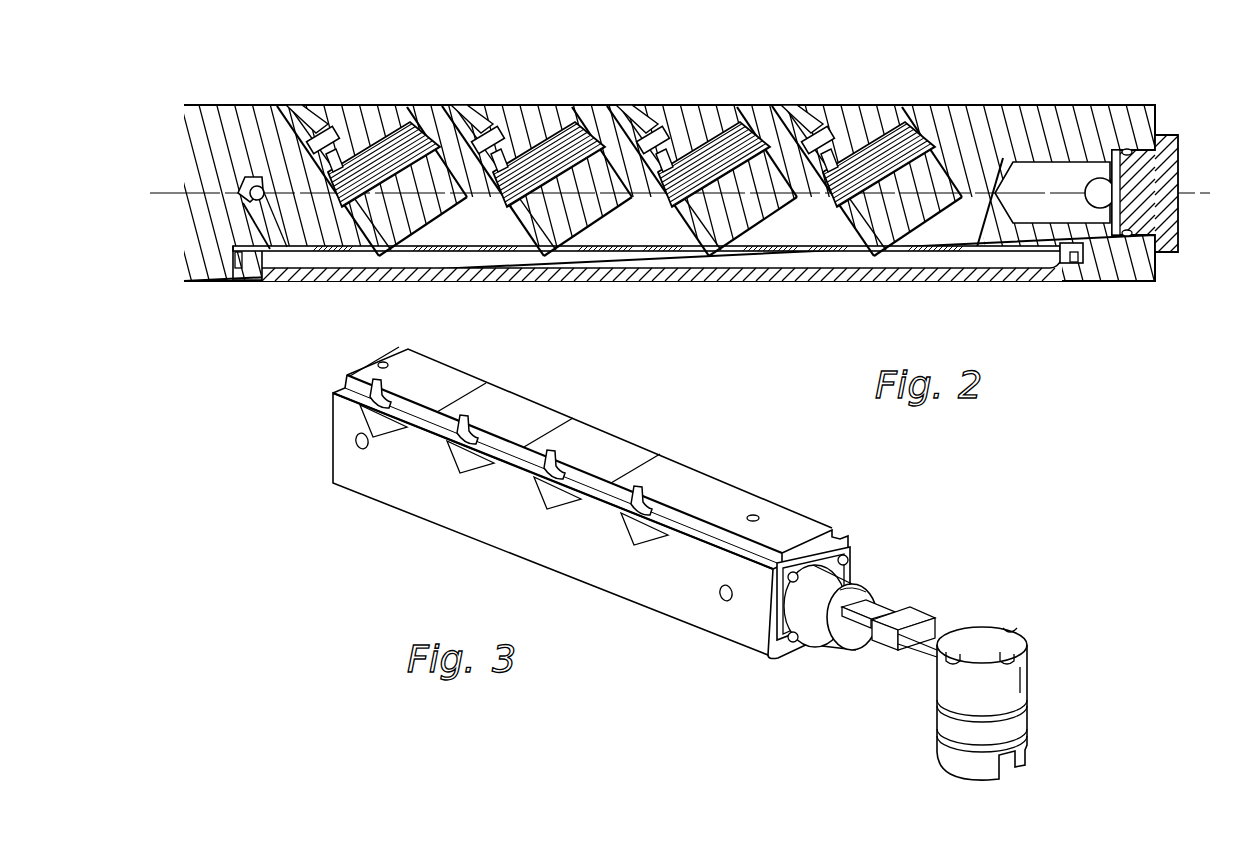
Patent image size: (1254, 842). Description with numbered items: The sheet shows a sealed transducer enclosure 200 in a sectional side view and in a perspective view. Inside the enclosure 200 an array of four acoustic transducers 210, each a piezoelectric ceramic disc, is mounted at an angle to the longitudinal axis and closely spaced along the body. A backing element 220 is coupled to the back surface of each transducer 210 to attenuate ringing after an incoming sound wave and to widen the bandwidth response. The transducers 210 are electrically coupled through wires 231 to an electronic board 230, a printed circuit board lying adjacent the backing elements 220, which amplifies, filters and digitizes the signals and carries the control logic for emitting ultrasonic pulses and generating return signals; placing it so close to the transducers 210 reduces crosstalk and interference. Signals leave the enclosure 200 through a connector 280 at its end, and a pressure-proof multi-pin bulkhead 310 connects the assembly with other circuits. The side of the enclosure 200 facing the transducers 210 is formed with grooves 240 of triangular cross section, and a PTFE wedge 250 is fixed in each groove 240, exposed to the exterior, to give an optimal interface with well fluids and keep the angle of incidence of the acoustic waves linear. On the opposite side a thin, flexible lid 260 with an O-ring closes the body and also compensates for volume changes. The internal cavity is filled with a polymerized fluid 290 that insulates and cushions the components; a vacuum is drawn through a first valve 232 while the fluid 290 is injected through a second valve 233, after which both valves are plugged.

In FIG. 2, the enclosure 200 is at (614, 137).
In FIG. 3, the enclosure 200 is at (605, 503).
In FIG. 2, the transducer 210 is at (400, 113).
In FIG. 2, the backing element 220 is at (365, 281).
In FIG. 2, the electronic board 230 is at (250, 281).
In FIG. 2, the wires 231 is at (1173, 198).
In FIG. 3, the first valve 232 is at (718, 593).
In FIG. 3, the second valve 233 is at (368, 448).
In FIG. 2, the groove 240 is at (370, 107).
In FIG. 2, the wedge 250 is at (283, 42).
In FIG. 2, the lid 260 is at (925, 281).
In FIG. 2, the connector 280 is at (1182, 153).
In FIG. 3, the connector 280 is at (858, 580).
In FIG. 2, the fluid 290 is at (985, 130).
In FIG. 3, the bulkhead 310 is at (1027, 668).